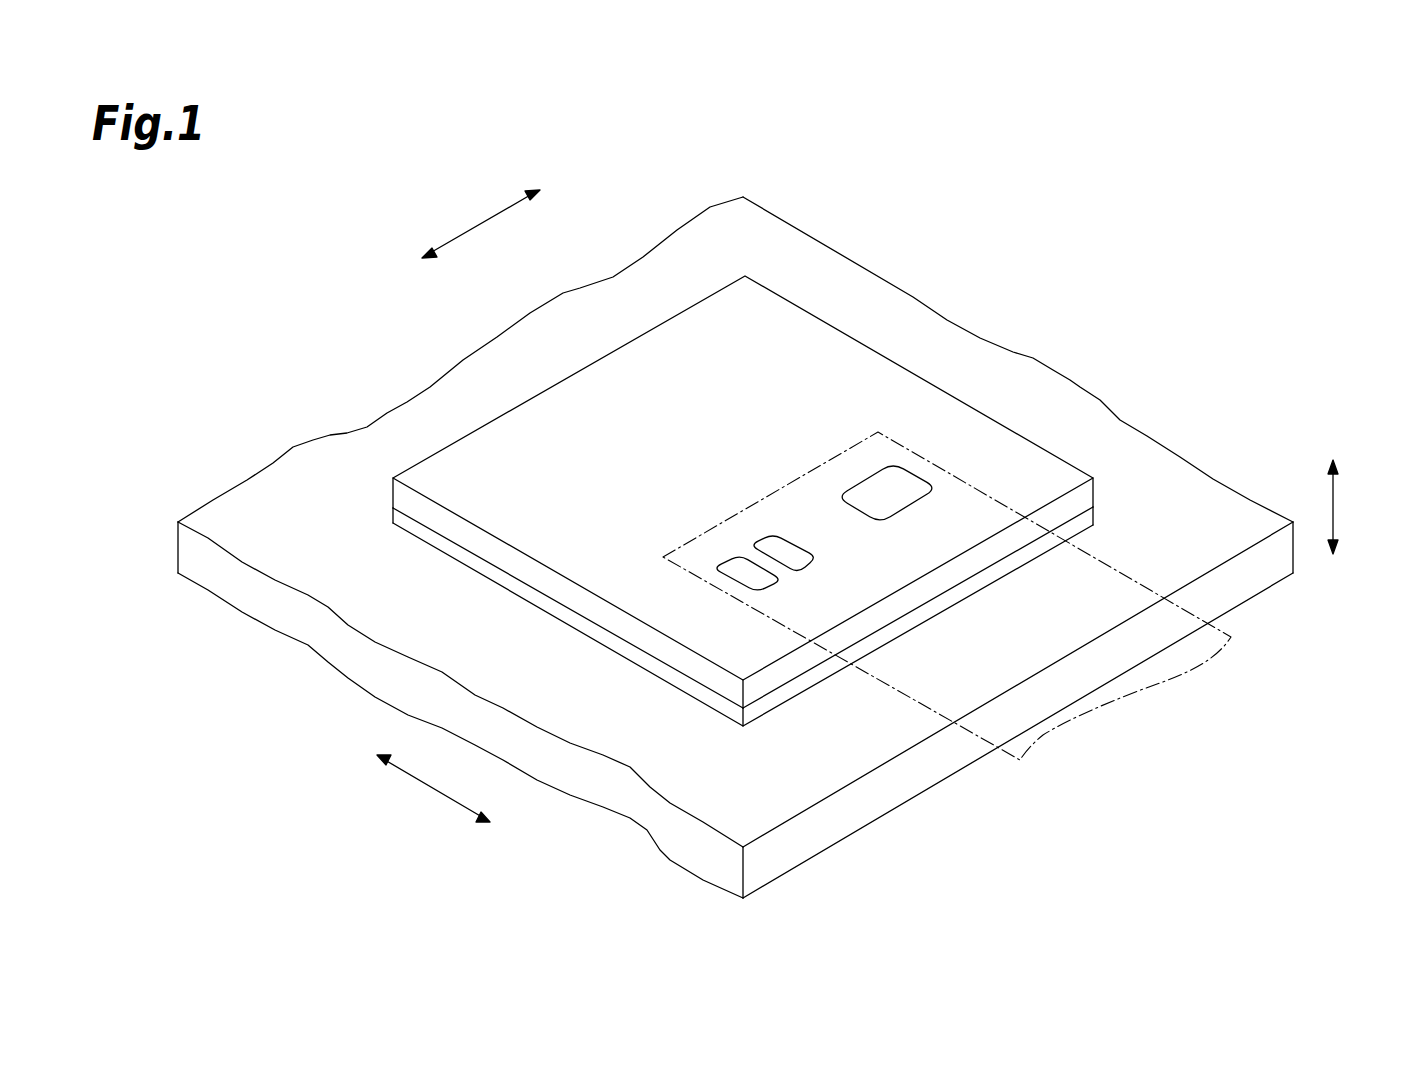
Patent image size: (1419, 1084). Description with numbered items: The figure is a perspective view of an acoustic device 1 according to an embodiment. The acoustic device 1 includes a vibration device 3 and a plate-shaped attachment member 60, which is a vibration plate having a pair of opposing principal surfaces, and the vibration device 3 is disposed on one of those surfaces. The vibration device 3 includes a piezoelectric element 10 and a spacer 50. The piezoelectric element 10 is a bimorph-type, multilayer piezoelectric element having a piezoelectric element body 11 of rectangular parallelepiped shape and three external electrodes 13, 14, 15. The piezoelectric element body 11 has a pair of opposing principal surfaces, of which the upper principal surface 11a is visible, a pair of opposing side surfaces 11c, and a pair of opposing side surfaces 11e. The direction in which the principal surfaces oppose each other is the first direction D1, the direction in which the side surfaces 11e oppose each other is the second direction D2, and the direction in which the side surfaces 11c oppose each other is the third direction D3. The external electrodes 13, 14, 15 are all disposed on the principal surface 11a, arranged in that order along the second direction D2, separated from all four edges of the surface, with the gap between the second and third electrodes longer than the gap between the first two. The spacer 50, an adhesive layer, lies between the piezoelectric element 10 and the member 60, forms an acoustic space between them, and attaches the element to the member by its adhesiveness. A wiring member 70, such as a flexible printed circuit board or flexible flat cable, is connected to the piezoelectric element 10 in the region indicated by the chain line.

The acoustic device 1 is at (1012, 133).
The vibration device 3 is at (836, 330).
The piezoelectric element 10 is at (746, 278).
The piezoelectric element body 11 is at (388, 493).
The principal surface 11a is at (985, 450).
The side surface 11c is at (564, 378).
The side surface 11e is at (922, 377).
The external electrode 13 is at (733, 568).
The external electrode 14 is at (782, 544).
The external electrode 15 is at (873, 487).
The spacer 50 is at (640, 668).
The attachment member 60 is at (1017, 353).
The wiring member 70 is at (812, 463).
The first direction D1 is at (1337, 508).
The second direction D2 is at (474, 222).
The third direction D3 is at (432, 790).